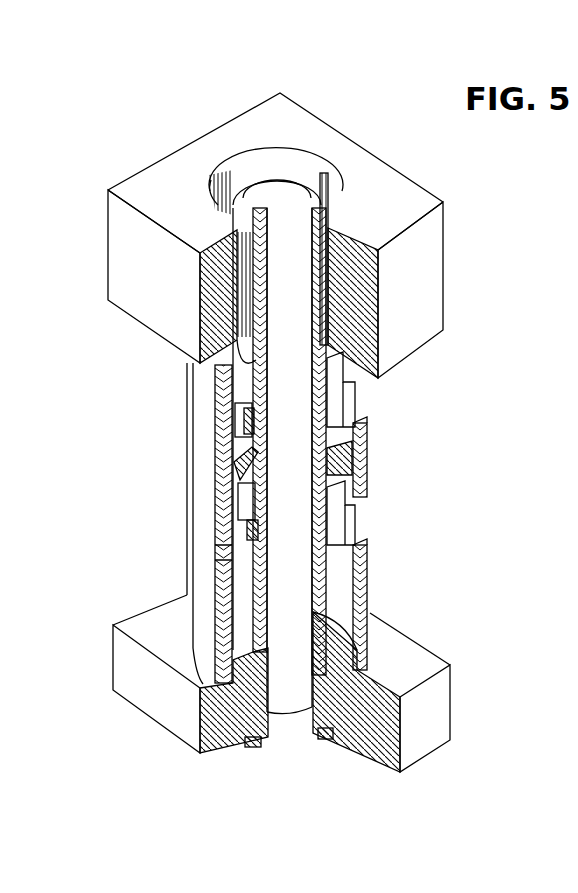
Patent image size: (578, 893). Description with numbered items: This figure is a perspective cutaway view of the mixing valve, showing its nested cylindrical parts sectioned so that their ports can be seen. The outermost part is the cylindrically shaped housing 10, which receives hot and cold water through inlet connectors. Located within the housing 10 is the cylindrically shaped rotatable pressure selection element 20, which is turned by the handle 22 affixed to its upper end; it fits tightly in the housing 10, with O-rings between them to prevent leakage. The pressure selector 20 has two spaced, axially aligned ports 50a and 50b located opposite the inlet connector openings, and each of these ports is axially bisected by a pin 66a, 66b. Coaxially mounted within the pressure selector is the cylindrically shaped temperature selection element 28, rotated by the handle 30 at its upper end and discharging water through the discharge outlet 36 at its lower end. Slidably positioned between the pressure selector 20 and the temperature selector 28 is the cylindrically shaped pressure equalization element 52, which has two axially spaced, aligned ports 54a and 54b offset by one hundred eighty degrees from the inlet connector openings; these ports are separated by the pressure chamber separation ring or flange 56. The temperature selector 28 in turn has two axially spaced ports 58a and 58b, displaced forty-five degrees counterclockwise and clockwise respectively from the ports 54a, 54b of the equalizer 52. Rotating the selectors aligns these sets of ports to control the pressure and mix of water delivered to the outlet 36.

The housing 10 is at (205, 462).
The pressure selection element 20 is at (230, 522).
The handle 22 is at (425, 278).
The temperature selection element 28 is at (295, 596).
The handle 30 is at (135, 676).
The discharge outlet 36 is at (255, 746).
The port 50a is at (355, 388).
The port 50b is at (333, 507).
The pressure equalization element 52 is at (215, 550).
The port 54a is at (237, 428).
The port 54b is at (242, 503).
The pressure chamber separation ring 56 is at (350, 458).
The port 58a is at (258, 414).
The port 58b is at (258, 508).
The pin 66a is at (358, 400).
The pin 66b is at (358, 523).